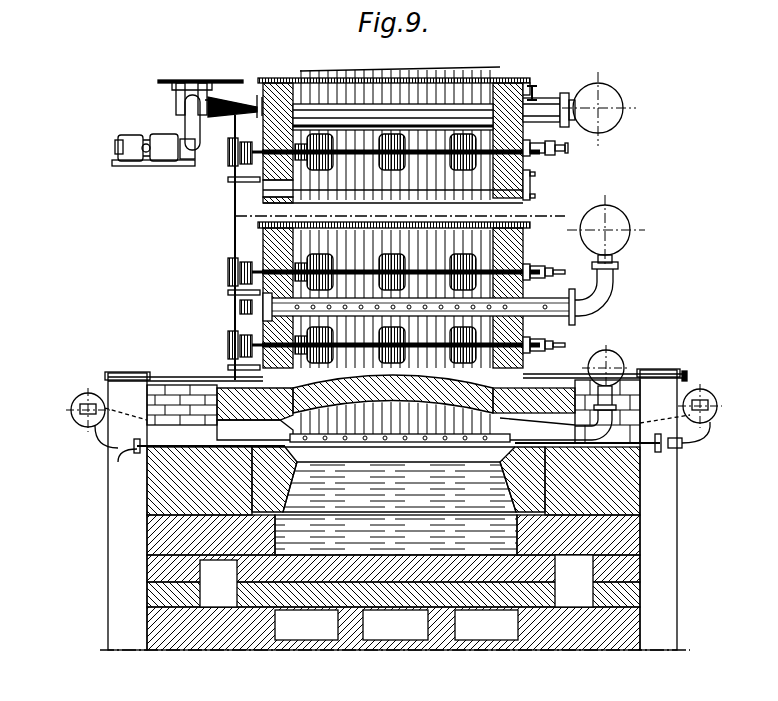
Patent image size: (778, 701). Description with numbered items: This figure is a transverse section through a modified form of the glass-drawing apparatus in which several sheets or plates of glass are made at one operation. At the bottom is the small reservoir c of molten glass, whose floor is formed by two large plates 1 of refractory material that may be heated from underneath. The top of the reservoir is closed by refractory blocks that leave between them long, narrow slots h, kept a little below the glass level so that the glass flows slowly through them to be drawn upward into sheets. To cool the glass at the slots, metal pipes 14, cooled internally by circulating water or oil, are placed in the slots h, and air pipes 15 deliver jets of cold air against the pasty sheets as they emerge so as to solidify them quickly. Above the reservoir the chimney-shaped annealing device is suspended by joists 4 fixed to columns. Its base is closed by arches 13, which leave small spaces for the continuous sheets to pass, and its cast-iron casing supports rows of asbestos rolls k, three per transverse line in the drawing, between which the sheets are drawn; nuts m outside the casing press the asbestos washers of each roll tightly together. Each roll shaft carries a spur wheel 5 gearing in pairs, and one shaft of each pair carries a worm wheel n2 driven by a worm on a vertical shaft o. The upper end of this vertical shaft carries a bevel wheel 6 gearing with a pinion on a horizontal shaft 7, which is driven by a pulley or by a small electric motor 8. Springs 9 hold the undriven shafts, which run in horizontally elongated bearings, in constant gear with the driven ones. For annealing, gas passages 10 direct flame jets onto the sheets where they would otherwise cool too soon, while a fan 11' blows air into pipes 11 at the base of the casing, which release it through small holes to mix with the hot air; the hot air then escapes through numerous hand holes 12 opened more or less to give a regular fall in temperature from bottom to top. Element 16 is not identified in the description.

The joists 4 is at (533, 88).
The horizontal shaft 7 is at (176, 108).
The bevel wheel 6 is at (232, 118).
The small electric motor 8 is at (152, 143).
The hand holes 12 is at (518, 185).
The spur wheel 5 is at (245, 255).
The worm wheel n2 is at (236, 265).
The vertical shaft o is at (237, 312).
The asbestos rolls k is at (397, 264).
The nuts m is at (546, 265).
The plates of refractory material 1 is at (518, 325).
The gas passages 10 is at (575, 312).
The fan 11' is at (609, 388).
The arches 13 is at (393, 392).
The pipes 11 is at (393, 421).
The air pipes 15 is at (238, 440).
The metal pipes 14 is at (137, 453).
The springs 9 is at (274, 479).
The slots h is at (399, 487).
The small reservoir c is at (396, 535).
The valve 16 is at (93, 395).